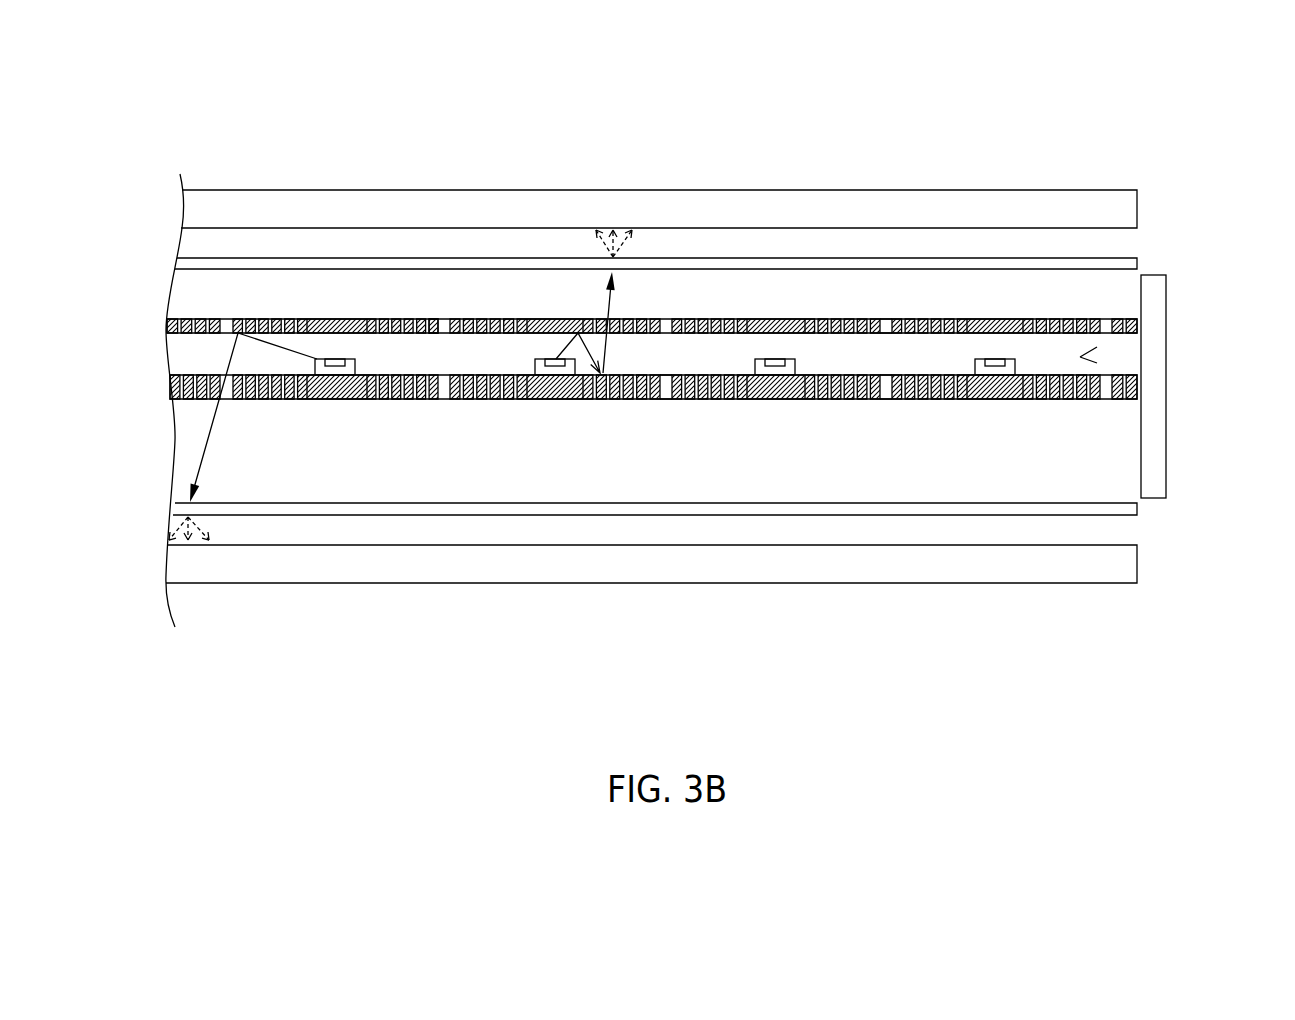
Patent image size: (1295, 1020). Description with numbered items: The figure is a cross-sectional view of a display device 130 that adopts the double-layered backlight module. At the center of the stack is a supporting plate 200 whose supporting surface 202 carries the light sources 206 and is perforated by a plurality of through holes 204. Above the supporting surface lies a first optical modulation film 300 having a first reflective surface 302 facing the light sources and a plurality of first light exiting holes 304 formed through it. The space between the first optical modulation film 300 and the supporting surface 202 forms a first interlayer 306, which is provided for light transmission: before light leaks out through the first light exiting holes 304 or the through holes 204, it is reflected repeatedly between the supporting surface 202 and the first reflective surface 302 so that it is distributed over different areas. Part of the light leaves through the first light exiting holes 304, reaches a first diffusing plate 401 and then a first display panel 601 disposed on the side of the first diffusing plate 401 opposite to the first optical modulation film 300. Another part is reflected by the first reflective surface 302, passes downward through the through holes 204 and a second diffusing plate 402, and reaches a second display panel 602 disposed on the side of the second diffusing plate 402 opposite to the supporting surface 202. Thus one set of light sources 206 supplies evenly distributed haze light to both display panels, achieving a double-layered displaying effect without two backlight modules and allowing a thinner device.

The display device 130 is at (178, 92).
The supporting plate 200 is at (1058, 400).
The supporting surface 202 is at (885, 355).
The through holes 204 is at (670, 408).
The light sources 206 is at (762, 372).
The first optical modulation film 300 is at (770, 320).
The first reflective surface 302 is at (428, 352).
The first light exiting holes 304 is at (889, 309).
The first interlayer 306 is at (1080, 357).
The first diffusing plate 401 is at (571, 268).
The second diffusing plate 402 is at (397, 508).
The first display panel 601 is at (1128, 208).
The second display panel 602 is at (1128, 563).